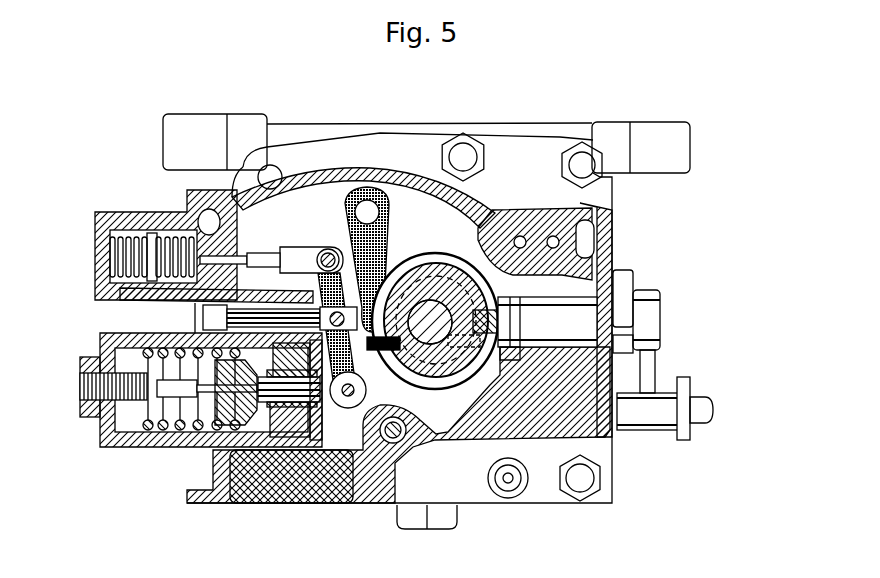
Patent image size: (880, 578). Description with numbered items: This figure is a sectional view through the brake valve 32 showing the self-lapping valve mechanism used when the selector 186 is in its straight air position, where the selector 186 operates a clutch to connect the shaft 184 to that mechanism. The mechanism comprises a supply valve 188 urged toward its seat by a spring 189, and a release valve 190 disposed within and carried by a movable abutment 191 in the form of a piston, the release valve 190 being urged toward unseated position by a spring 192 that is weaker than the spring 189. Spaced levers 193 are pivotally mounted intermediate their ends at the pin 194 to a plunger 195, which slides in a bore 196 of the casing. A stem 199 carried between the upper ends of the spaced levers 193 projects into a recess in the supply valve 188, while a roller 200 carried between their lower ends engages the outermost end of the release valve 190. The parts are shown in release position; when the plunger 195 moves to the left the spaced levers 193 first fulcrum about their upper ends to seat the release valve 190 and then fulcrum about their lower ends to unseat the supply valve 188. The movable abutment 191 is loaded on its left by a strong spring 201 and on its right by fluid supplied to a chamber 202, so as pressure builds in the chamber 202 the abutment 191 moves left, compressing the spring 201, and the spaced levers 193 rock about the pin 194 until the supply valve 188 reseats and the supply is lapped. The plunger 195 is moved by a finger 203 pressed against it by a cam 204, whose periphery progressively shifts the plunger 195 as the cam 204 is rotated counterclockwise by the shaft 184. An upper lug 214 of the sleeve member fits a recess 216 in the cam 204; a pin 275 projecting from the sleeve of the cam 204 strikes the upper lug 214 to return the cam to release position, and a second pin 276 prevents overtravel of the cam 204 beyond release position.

The carburetor body 32 is at (549, 120).
The shaft 184 is at (458, 378).
The selector 186 is at (690, 380).
The supply valve 188 is at (197, 228).
The spring 189 is at (110, 258).
The release valve 190 is at (260, 452).
The movable abutment 191 is at (303, 452).
The spring 192 is at (328, 397).
The spaced levers 193 is at (366, 390).
The pin 194 is at (330, 250).
The plunger 195 is at (287, 297).
The bore 196 is at (203, 317).
The stem 199 is at (267, 243).
The roller 200 is at (348, 408).
The spring 201 is at (180, 425).
The chamber 202 is at (427, 440).
The finger 203 is at (375, 244).
The cam 204 is at (447, 272).
The upper lug 214 is at (505, 350).
The recess 216 is at (498, 311).
The pin 275 is at (501, 379).
The pin 276 is at (470, 372).